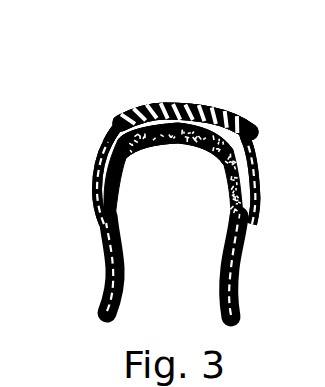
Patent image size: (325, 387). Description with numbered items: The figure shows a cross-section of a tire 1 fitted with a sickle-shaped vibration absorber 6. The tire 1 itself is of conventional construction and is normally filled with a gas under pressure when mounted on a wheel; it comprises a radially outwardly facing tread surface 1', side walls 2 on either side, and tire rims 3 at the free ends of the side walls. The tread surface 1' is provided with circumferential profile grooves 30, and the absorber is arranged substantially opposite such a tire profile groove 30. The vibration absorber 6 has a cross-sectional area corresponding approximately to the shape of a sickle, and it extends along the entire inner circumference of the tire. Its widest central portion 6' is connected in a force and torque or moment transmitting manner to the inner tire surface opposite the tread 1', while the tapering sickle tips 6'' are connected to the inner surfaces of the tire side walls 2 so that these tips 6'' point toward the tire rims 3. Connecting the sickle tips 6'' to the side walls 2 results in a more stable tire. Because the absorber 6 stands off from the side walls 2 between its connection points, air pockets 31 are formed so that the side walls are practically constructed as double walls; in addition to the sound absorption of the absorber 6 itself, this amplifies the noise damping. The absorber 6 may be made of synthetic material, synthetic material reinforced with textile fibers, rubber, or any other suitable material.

The tire 1 is at (176, 143).
The tread surface 1' is at (185, 85).
The side walls 2 is at (92, 194).
The tire rim 3 is at (100, 304).
The vibration absorber 6 is at (173, 172).
The widest central portion 6' is at (175, 174).
The sickle tips 6'' is at (173, 234).
The circumferential grooves 30 is at (213, 111).
The air pockets 31 is at (115, 152).